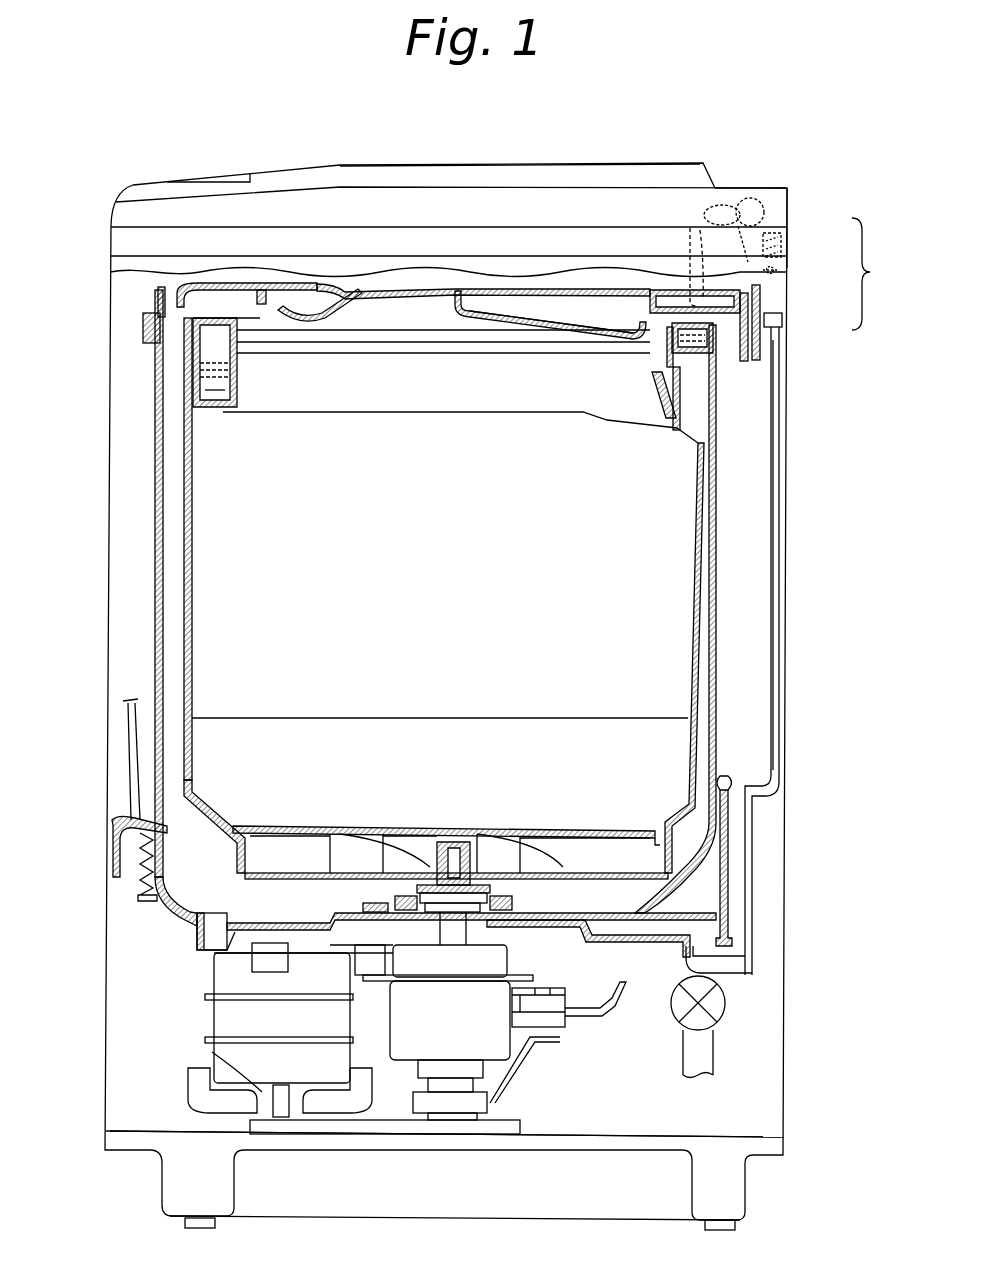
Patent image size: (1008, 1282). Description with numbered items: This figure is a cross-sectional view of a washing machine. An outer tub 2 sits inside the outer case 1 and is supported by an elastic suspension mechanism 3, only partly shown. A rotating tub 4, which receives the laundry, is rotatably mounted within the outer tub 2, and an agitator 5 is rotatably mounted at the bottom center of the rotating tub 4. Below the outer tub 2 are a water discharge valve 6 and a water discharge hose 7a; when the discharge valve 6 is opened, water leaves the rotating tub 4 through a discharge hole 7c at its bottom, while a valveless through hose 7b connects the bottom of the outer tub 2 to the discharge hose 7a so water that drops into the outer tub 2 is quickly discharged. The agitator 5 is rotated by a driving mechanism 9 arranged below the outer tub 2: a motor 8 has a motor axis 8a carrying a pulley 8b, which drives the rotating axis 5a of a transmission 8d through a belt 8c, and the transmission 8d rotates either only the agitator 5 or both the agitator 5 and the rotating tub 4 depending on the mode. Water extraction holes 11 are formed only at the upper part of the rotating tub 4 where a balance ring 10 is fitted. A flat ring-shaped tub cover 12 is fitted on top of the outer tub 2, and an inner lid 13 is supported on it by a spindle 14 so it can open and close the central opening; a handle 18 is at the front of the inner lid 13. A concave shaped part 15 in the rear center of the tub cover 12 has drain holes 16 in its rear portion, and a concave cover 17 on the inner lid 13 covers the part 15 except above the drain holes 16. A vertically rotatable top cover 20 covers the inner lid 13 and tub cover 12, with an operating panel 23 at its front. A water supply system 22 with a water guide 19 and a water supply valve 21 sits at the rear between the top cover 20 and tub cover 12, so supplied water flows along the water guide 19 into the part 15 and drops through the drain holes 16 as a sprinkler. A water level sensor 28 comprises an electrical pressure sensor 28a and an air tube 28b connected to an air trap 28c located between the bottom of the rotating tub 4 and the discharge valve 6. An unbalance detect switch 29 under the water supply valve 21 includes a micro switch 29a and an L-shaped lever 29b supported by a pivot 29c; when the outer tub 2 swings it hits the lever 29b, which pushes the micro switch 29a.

The outer case 1 is at (109, 462).
The outer tub 2 is at (158, 612).
The elastic suspension mechanism 3 is at (128, 740).
The rotating tub 4 is at (188, 515).
The agitator 5 is at (300, 826).
The rotating axis 5a is at (490, 1100).
The water discharge valve 6 is at (726, 1004).
The water discharge hose 7a is at (715, 1052).
The through hose 7b is at (205, 930).
The discharge hole 7c is at (430, 840).
The motor 8 is at (214, 1020).
The motor axis 8a is at (262, 1092).
The pulley 8b is at (305, 1105).
The belt 8c is at (303, 1128).
The transmission 8d is at (500, 955).
The driving mechanism 9 is at (393, 1140).
The balance ring 10 is at (217, 410).
The water extraction holes 11 is at (160, 372).
The tub cover 12 is at (222, 285).
The inner lid 13 is at (415, 290).
The spindle 14 is at (650, 292).
The concave shaped part 15 is at (555, 325).
The drain holes 16 is at (623, 332).
The concave cover 17 is at (502, 290).
The handle 18 is at (305, 290).
The water guide 19 is at (688, 300).
The top cover 20 is at (489, 163).
The water supply valve 21 is at (754, 200).
The water supply system 22 is at (724, 210).
The operating panel 23 is at (238, 168).
The water level sensor 28 is at (780, 491).
The electrical pressure sensor 28a is at (783, 322).
The air tube 28b is at (779, 532).
The air trap 28c is at (752, 838).
The unbalance detect switch 29 is at (847, 259).
The micro switch 29a is at (786, 241).
The L-shaped lever 29b is at (762, 300).
The pivot 29c is at (786, 271).